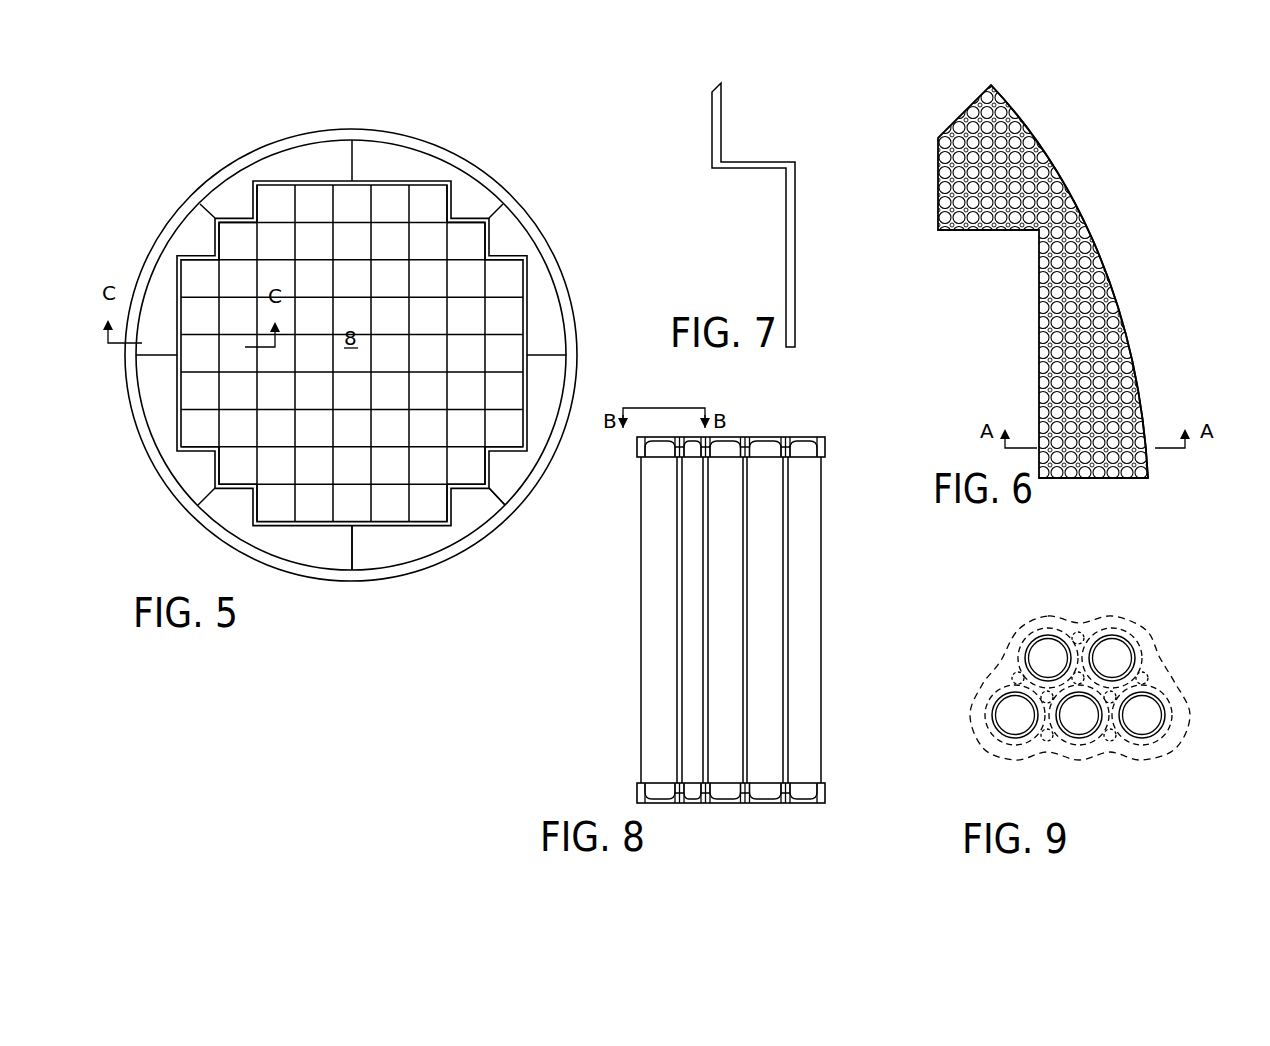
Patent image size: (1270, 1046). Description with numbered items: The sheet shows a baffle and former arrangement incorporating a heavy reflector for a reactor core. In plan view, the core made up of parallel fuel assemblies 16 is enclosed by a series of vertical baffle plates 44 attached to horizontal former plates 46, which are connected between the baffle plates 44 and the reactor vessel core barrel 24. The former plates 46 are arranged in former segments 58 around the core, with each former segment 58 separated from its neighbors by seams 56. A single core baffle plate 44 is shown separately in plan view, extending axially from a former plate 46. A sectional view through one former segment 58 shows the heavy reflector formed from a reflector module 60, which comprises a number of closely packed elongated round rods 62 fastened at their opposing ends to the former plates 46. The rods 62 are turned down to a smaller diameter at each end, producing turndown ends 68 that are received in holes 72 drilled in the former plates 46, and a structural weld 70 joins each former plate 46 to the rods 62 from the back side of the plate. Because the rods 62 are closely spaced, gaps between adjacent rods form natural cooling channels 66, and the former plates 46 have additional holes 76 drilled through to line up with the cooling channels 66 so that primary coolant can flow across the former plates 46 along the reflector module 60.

In FIG. 5, the fuel assemblies 16 is at (500, 355).
In FIG. 5, the reactor vessel core barrel 24 is at (420, 144).
In FIG. 5, the baffle plates 44 is at (362, 182).
In FIG. 7, the baffle plates 44 is at (737, 161).
In FIG. 5, the former plates 46 is at (472, 202).
In FIG. 6, the former plates 46 is at (1115, 270).
In FIG. 8, the former plates 46 is at (828, 447).
In FIG. 9, the former plates 46 is at (1162, 645).
In FIG. 5, the seams 56 is at (495, 487).
In FIG. 5, the former segments 58 is at (276, 174).
In FIG. 6, the former segments 58 is at (1075, 281).
In FIG. 8, the reflector module 60 is at (735, 608).
In FIG. 8, the elongated rods 62 is at (648, 705).
In FIG. 9, the elongated rods 62 is at (1088, 689).
In FIG. 9, the cooling channels 66 is at (1093, 681).
In FIG. 8, the turndown ends 68 is at (660, 440).
In FIG. 9, the turndown ends 68 is at (1130, 653).
In FIG. 8, the weld 70 is at (812, 440).
In FIG. 6, the holes 72 is at (1058, 208).
In FIG. 9, the holes 72 is at (1088, 689).
In FIG. 9, the holes 76 is at (1148, 678).